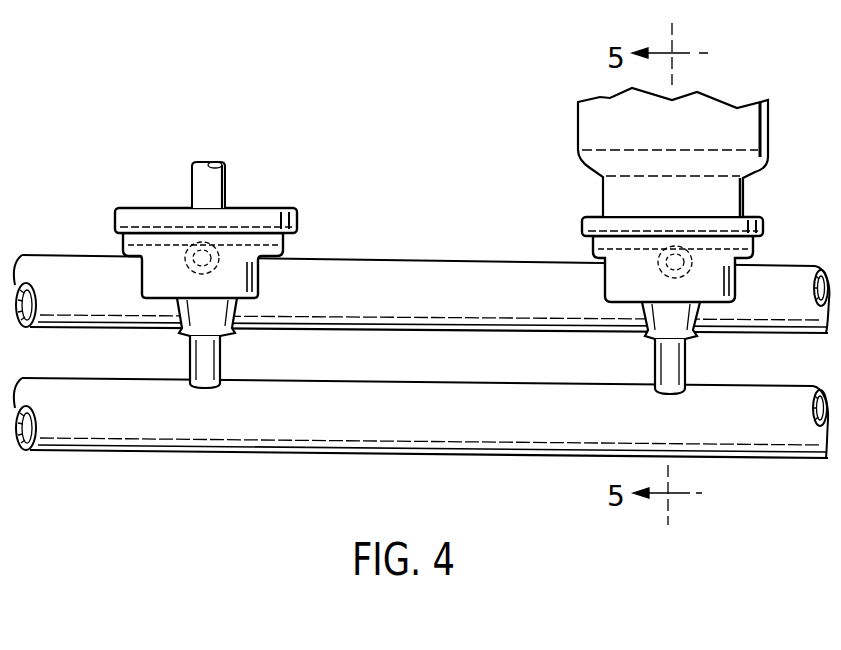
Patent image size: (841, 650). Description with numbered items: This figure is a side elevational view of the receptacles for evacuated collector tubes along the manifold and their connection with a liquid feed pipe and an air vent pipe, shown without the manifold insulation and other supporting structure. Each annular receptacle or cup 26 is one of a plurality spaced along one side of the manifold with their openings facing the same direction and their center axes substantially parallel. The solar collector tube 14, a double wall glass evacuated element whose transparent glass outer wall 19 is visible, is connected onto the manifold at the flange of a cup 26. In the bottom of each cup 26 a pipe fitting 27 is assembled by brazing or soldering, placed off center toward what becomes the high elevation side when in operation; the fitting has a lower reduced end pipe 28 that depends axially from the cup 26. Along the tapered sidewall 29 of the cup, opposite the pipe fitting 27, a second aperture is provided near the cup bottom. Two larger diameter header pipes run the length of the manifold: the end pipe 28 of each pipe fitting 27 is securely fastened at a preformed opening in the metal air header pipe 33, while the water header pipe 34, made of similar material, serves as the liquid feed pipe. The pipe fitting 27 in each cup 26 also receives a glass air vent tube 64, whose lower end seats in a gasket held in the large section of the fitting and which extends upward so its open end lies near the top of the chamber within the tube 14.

The solar collector tube 14 is at (684, 140).
The transparent glass outer wall 19 is at (704, 152).
The annular receptacle or cup 26 is at (298, 223).
The pipe fitting 27 is at (242, 322).
The lower reduced end pipe 28 is at (222, 359).
The tapered sidewall 29 is at (603, 275).
The air header pipe 33 is at (395, 382).
The water header pipe 34 is at (388, 260).
The air vent tube 64 is at (225, 178).